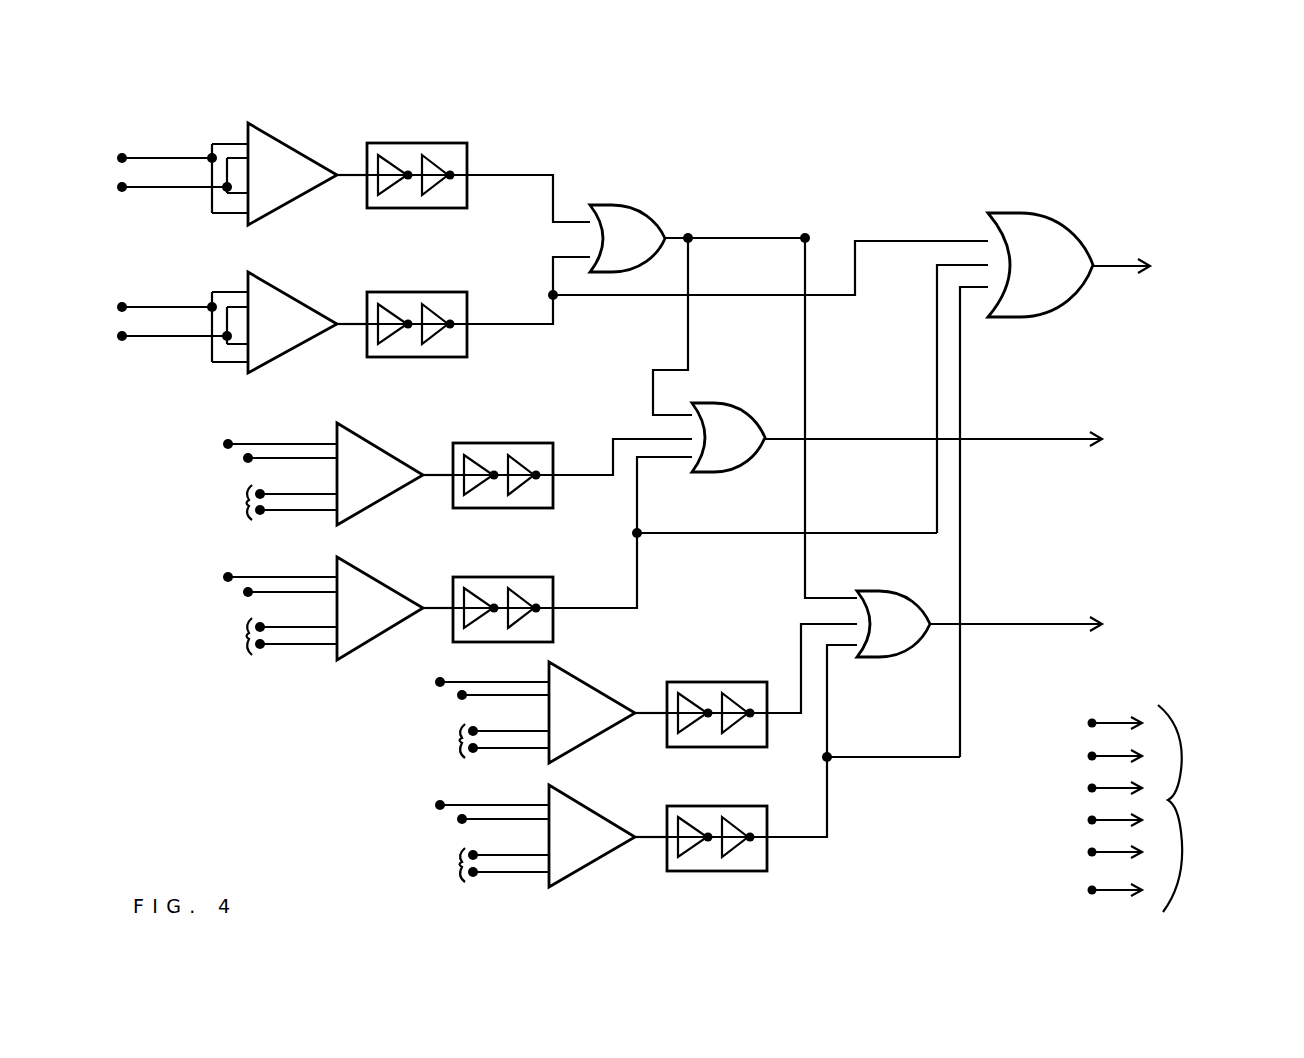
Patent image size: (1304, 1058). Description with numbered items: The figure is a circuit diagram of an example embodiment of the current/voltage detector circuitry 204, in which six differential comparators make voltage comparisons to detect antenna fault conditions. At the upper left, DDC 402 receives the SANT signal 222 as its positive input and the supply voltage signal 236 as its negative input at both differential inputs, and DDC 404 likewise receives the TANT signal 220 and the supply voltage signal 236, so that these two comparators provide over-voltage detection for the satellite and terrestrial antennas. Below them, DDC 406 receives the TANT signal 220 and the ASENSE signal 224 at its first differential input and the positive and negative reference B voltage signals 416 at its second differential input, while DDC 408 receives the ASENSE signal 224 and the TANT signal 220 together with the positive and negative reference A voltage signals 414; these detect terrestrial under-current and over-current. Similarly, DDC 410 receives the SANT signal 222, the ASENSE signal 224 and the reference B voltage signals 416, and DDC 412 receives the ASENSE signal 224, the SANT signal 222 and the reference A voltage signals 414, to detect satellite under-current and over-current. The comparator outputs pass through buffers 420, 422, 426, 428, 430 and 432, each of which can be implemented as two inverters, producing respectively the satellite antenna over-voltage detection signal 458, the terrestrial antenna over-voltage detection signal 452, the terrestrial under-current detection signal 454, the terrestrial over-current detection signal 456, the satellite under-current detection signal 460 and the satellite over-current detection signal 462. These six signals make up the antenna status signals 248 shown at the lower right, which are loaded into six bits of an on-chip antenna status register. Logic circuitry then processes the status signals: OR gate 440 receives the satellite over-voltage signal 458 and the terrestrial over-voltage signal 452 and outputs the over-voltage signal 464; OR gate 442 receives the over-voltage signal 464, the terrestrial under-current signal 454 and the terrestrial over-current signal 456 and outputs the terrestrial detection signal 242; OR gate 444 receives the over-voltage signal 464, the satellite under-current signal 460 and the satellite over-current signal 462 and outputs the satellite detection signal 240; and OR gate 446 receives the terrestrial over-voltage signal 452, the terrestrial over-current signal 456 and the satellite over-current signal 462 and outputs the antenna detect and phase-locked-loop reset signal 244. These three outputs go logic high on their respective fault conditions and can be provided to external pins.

The current/voltage detector circuitry 204 is at (832, 140).
The SANT signal 222 is at (188, 158).
The VDD signal 236 is at (195, 190).
The DDC 402 is at (302, 153).
The buffer 420 is at (410, 143).
The satellite antenna over-voltage detection signal (SOV) 458 is at (555, 192).
The OR gate 440 is at (618, 204).
The over-voltage (OV) signal 464 is at (762, 237).
The OR gate 446 is at (1042, 213).
The ANTDET3/PLL-RES signal 244 is at (1112, 266).
The TANT signal 220 is at (184, 306).
The DDC 404 is at (302, 305).
The buffer 422 is at (410, 292).
The terrestrial antenna over-voltage detection signal (TOV) 452 is at (520, 325).
The OR gate 442 is at (720, 404).
The TDET signal 242 is at (1035, 440).
The ASENSE signal 224 is at (245, 459).
The DDC 406 is at (390, 455).
The buffer 426 is at (498, 443).
The terrestrial under-current detection signal (TUC) 454 is at (563, 480).
The reference B voltage (VREFB+/−) signals 416 is at (247, 518).
The DDC 408 is at (390, 590).
The buffer 428 is at (498, 577).
The terrestrial over-current detection signal (TOC) 456 is at (640, 607).
The reference A voltage (VREFA+/−) signals 414 is at (247, 653).
The DDC 410 is at (586, 684).
The buffer 430 is at (694, 682).
The satellite under-current detection signal (SUC) 460 is at (798, 641).
The OR gate 444 is at (882, 592).
The SDET signal 240 is at (1027, 624).
The DDC 412 is at (590, 806).
The buffer 432 is at (695, 806).
The satellite over-current detection signal (SOC) 462 is at (829, 830).
The ANT_STAT signals 248 is at (1182, 730).